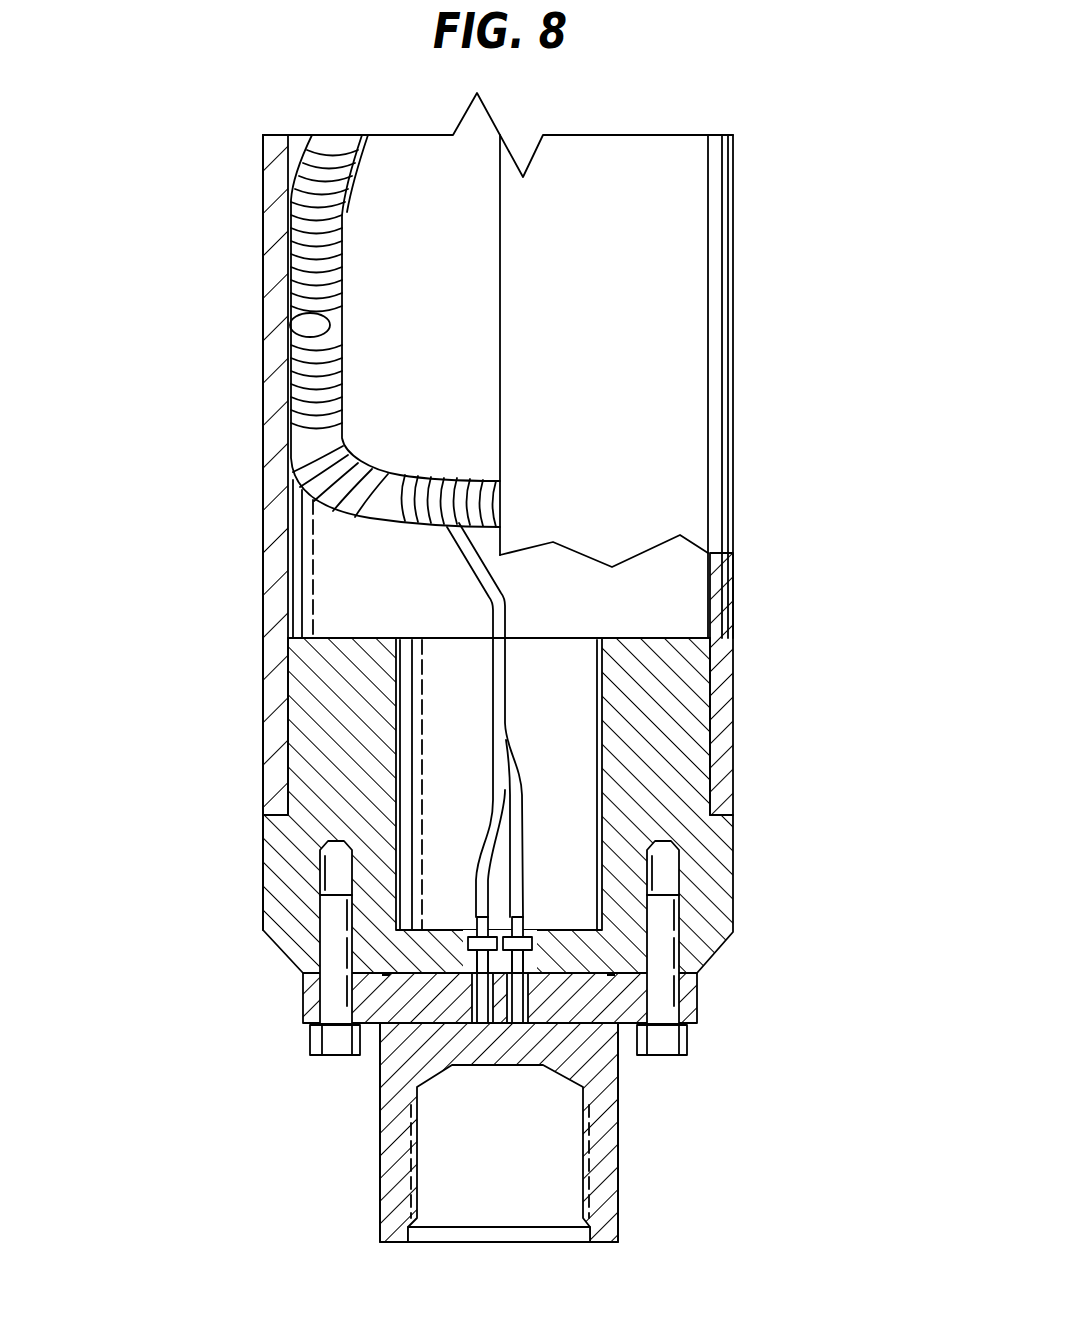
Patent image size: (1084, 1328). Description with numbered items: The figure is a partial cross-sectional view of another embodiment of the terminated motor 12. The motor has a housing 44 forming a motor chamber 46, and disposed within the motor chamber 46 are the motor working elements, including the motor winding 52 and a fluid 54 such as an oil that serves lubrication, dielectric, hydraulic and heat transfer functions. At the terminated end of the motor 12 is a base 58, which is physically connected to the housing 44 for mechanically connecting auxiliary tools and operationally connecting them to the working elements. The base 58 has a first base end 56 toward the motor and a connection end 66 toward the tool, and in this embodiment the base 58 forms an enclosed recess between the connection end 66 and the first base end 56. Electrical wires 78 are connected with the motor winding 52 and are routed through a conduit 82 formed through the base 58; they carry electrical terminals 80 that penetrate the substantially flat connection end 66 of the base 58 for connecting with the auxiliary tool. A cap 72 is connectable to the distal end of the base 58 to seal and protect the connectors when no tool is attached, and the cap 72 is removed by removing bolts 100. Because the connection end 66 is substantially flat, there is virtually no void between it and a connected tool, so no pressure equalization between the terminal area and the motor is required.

The terminated motor 12 is at (762, 223).
The housing 44 is at (735, 321).
The motor chamber 46 is at (443, 222).
The motor winding 52 is at (312, 377).
The fluid 54 is at (410, 300).
The first base end 56 is at (670, 638).
The base 58 is at (263, 917).
The connection end 66 is at (630, 973).
The cap 72 is at (380, 1158).
The electrical wires 78 is at (457, 550).
The electrical terminals 80 is at (483, 925).
The conduit 82 is at (440, 727).
The bolts 100 is at (690, 1038).